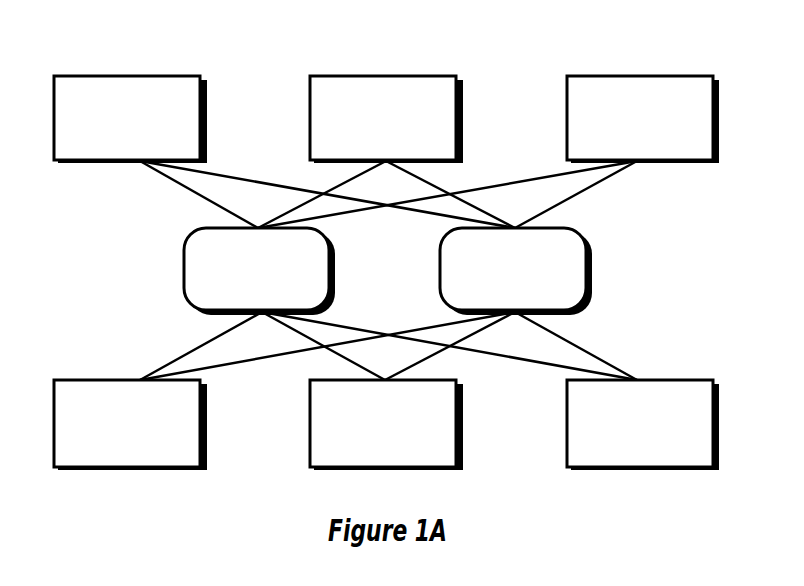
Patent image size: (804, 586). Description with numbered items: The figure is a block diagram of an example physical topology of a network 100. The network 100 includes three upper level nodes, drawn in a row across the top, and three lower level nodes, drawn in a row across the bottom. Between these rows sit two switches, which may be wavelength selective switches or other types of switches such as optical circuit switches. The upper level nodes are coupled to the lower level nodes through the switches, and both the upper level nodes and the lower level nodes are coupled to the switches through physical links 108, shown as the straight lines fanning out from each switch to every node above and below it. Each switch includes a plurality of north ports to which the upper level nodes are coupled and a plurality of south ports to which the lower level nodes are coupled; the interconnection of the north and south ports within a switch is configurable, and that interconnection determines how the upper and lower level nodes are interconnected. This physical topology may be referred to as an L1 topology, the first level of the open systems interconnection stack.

The network 100 is at (386, 243).
The physical link 108 is at (570, 200).